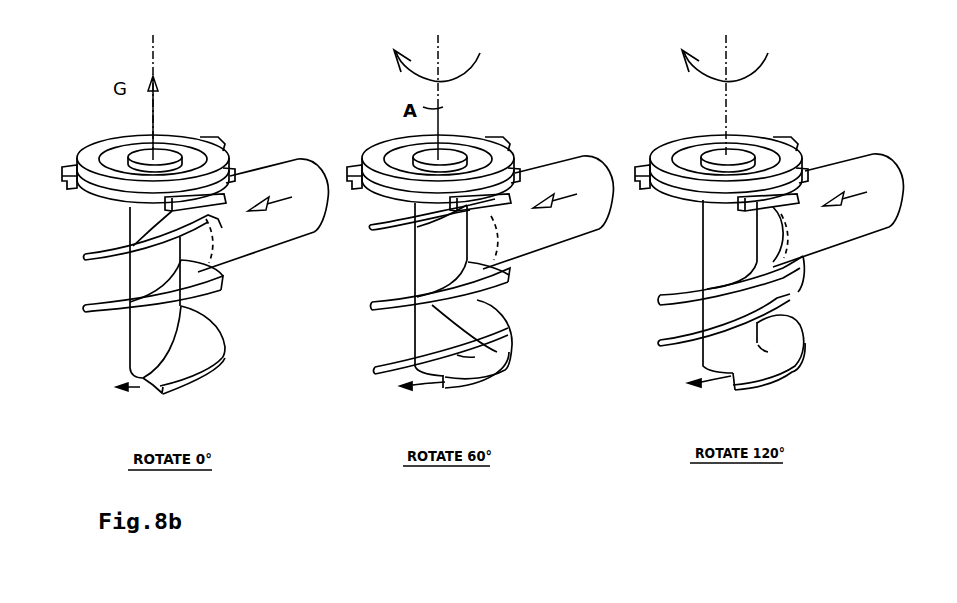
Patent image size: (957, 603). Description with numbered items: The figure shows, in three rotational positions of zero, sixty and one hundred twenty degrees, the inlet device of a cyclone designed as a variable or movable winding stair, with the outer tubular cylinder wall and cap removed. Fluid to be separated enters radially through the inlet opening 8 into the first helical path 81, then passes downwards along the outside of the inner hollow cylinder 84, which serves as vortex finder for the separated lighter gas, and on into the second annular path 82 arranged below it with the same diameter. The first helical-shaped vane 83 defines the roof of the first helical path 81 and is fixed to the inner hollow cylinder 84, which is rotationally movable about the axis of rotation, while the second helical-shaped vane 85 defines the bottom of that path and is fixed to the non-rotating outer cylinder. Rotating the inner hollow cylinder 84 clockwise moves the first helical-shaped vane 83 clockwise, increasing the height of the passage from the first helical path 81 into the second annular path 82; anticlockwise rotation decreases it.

The inlet opening 8 is at (263, 215).
The first helical path 81 is at (175, 257).
The second annular path 82 is at (110, 402).
The first helical-shaped vane 83 is at (380, 362).
The inner hollow cylinder 84 is at (130, 278).
The second helical-shaped vane 85 is at (525, 350).